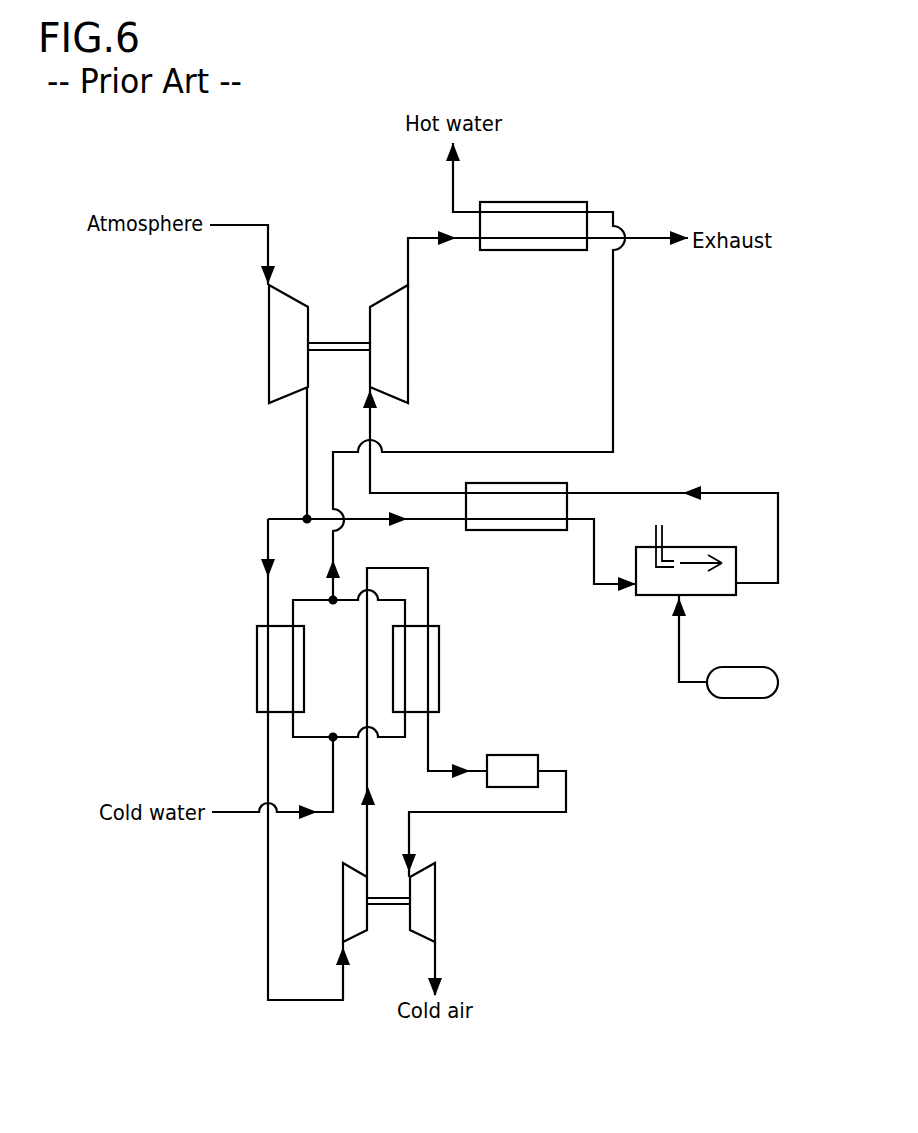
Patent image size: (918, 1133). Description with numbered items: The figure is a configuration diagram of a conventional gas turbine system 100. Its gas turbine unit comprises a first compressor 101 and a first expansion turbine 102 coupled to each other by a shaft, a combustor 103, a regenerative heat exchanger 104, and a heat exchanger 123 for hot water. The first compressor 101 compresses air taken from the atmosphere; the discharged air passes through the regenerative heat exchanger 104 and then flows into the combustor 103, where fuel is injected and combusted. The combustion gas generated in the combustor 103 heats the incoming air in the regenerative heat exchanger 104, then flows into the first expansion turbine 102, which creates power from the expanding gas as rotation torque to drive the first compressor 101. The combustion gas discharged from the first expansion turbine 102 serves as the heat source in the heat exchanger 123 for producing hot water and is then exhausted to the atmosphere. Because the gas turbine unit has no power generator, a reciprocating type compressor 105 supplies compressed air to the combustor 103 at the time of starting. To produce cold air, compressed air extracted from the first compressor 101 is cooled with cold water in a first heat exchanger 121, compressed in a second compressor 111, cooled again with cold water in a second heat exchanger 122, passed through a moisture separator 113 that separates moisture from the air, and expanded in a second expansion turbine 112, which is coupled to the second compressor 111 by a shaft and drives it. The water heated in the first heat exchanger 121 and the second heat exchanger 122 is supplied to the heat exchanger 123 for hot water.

The gas turbine system 100 is at (695, 158).
The first compressor 101 is at (269, 357).
The first expansion turbine 102 is at (408, 358).
The combustor 103 is at (658, 597).
The regenerative heat exchanger 104 is at (516, 531).
The reciprocating type compressor 105 is at (744, 700).
The second compressor 111 is at (343, 895).
The second expansion turbine 112 is at (435, 898).
The moisture separator 113 is at (512, 755).
The first heat exchanger 121 is at (257, 668).
The second heat exchanger 122 is at (440, 665).
The heat exchanger for hot water 123 is at (535, 201).